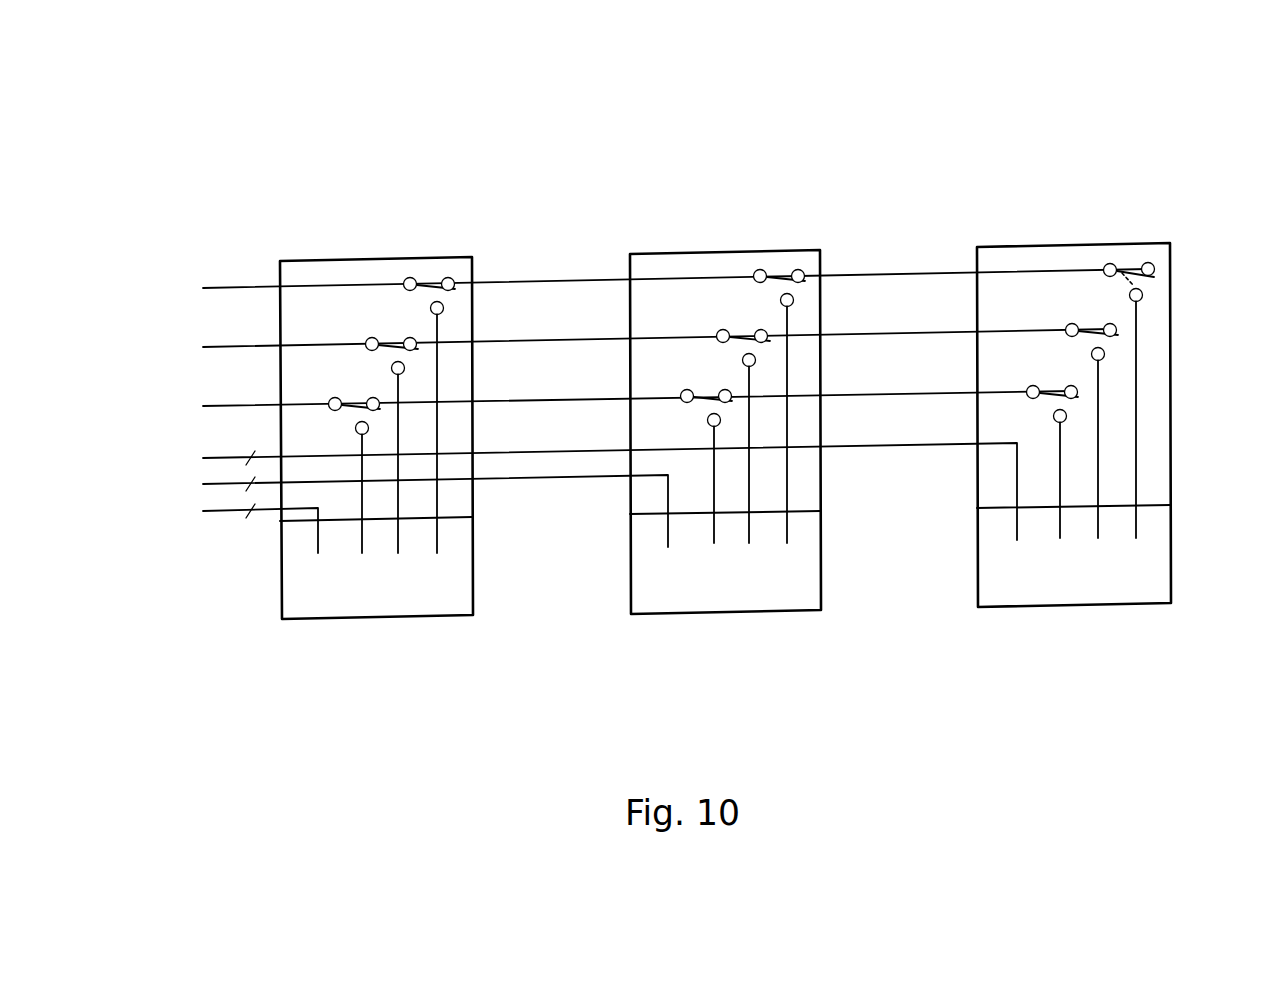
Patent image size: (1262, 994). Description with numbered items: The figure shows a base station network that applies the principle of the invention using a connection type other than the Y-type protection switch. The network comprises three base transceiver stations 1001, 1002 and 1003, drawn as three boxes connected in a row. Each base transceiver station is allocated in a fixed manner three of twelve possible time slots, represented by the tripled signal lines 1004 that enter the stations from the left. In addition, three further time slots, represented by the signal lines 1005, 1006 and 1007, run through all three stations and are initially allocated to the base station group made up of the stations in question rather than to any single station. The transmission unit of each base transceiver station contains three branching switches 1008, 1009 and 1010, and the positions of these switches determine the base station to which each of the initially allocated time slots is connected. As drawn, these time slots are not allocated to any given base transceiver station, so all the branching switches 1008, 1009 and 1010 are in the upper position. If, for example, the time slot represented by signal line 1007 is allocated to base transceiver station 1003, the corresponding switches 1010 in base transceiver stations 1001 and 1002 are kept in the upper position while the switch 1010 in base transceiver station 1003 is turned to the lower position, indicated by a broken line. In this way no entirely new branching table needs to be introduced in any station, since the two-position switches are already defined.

The base transceiver station 1001 is at (510, 597).
The base transceiver station 1002 is at (858, 590).
The base transceiver station 1003 is at (1208, 586).
The tripled signal lines 1004 is at (202, 435).
The signal line 1005 is at (220, 405).
The signal line 1006 is at (220, 346).
The signal line 1007 is at (220, 287).
The branching switch 1008 is at (353, 404).
The branching switch 1009 is at (398, 352).
The branching switch 1010 is at (431, 293).